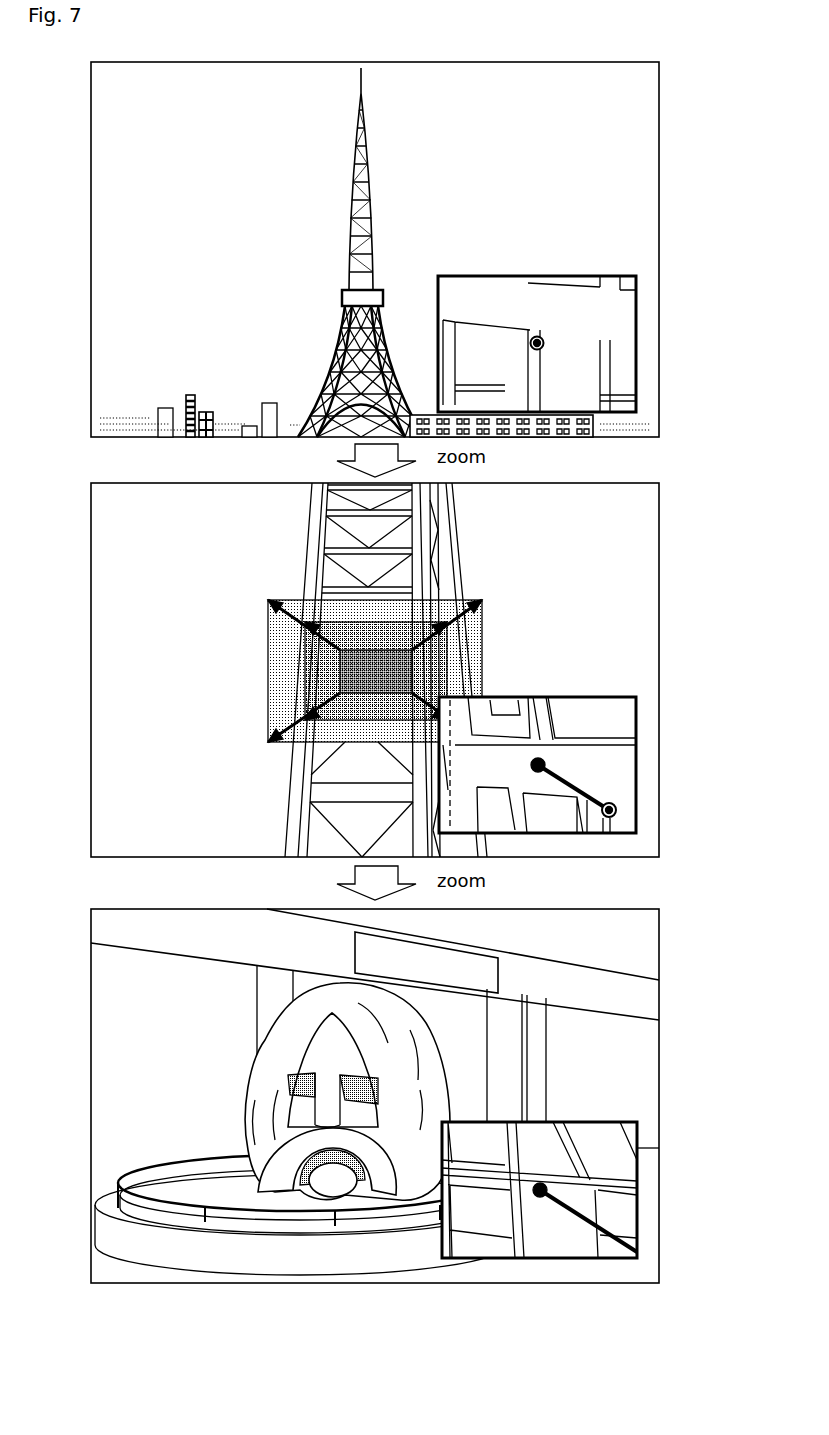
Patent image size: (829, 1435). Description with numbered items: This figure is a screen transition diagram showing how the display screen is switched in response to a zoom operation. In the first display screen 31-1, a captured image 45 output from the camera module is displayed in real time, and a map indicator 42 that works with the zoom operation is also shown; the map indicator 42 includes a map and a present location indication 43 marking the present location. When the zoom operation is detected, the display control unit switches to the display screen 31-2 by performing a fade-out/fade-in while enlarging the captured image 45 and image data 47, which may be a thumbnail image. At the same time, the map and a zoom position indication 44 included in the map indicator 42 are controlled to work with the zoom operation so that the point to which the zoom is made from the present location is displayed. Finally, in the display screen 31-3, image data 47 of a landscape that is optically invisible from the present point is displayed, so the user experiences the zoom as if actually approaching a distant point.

The display screen 31-1 is at (659, 246).
The display screen 31-2 is at (659, 672).
The display screen 31-3 is at (659, 1093).
The map indicator 42 is at (636, 298).
The present location indication 43 is at (543, 343).
The zoom position indication 44 is at (545, 765).
The captured image 45 is at (630, 143).
The image data 47 is at (268, 667).